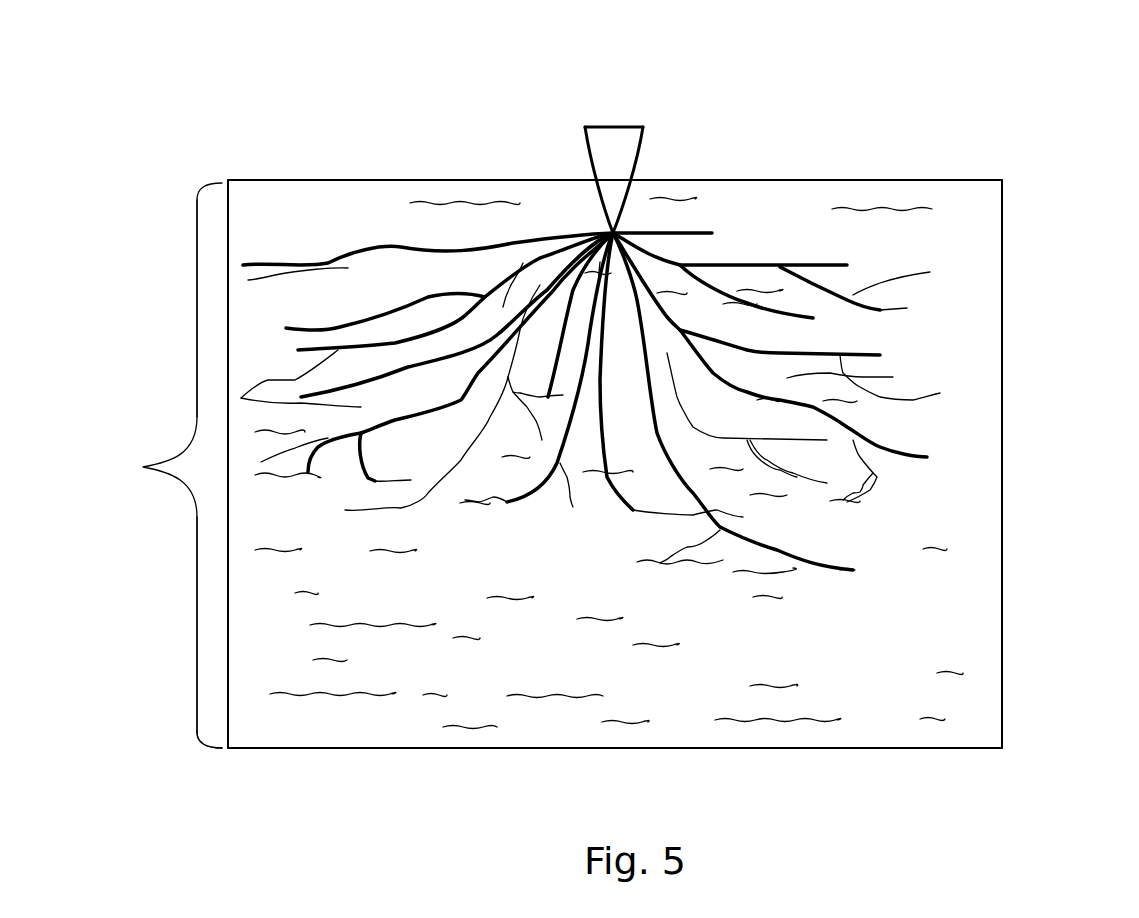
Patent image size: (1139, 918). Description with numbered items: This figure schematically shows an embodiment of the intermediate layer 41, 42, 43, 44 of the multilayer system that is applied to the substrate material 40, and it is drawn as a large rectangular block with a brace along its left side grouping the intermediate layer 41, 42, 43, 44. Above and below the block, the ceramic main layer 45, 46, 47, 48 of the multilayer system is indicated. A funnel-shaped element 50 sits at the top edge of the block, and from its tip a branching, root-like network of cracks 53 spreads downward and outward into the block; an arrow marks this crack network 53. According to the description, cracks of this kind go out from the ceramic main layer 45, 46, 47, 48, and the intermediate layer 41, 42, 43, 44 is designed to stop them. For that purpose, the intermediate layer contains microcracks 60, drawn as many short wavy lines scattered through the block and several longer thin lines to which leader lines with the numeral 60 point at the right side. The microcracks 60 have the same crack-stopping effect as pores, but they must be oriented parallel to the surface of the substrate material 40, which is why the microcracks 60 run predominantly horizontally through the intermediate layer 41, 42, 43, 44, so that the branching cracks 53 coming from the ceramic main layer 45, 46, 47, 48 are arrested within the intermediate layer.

The substrate material 40 is at (615, 490).
The intermediate layer 41 is at (165, 465).
The intermediate layer 42 is at (152, 325).
The intermediate layer 43 is at (152, 607).
The intermediate layer 44 is at (165, 643).
The ceramic main layer 45 is at (399, 471).
The ceramic main layer 46 is at (454, 471).
The ceramic main layer 47 is at (509, 471).
The ceramic main layer 48 is at (564, 471).
The wellbore injection point 50 is at (622, 140).
The induced fracture network 53 is at (733, 247).
The microcracks 60 is at (847, 265).